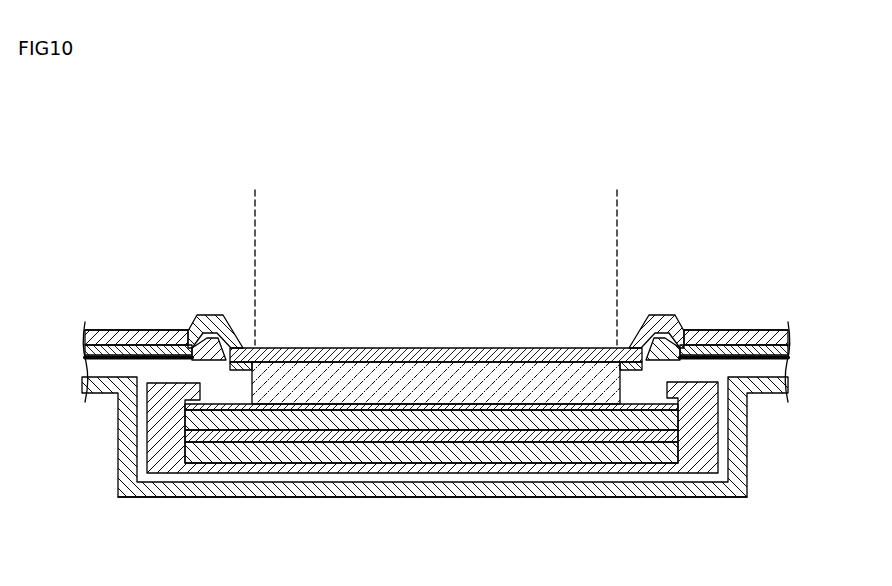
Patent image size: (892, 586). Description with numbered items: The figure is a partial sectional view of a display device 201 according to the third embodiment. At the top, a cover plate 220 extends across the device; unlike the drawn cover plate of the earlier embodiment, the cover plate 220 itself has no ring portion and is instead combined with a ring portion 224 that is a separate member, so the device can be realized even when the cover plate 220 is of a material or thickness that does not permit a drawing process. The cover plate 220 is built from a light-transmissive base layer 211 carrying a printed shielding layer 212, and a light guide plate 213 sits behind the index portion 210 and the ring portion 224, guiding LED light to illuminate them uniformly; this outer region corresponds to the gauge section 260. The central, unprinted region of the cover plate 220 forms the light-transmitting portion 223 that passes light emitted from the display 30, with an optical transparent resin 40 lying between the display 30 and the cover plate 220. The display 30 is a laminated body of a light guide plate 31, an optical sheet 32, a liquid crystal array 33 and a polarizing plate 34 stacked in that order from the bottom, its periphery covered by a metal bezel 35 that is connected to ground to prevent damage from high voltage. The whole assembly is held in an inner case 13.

The display device 201 is at (660, 126).
The gauge section 260 is at (247, 190).
The light-transmitting portion 223 is at (263, 190).
The index portion 210 is at (128, 330).
The base layer 211 is at (85, 336).
The shielding layer 212 is at (85, 350).
The light guide plate 213 is at (85, 356).
The ring portion 224 is at (207, 315).
The cover plate 220 is at (384, 345).
The optical transparent resin 40 is at (520, 352).
The display 30 is at (218, 482).
The inner case 13 is at (615, 498).
The metal bezel 35 is at (720, 454).
The polarizing plate 34 is at (340, 406).
The liquid crystal array 33 is at (410, 412).
The optical sheet 32 is at (483, 436).
The light guide plate 31 is at (540, 450).